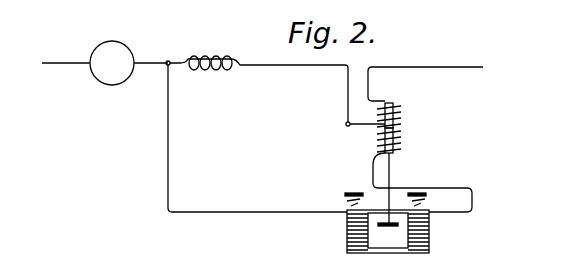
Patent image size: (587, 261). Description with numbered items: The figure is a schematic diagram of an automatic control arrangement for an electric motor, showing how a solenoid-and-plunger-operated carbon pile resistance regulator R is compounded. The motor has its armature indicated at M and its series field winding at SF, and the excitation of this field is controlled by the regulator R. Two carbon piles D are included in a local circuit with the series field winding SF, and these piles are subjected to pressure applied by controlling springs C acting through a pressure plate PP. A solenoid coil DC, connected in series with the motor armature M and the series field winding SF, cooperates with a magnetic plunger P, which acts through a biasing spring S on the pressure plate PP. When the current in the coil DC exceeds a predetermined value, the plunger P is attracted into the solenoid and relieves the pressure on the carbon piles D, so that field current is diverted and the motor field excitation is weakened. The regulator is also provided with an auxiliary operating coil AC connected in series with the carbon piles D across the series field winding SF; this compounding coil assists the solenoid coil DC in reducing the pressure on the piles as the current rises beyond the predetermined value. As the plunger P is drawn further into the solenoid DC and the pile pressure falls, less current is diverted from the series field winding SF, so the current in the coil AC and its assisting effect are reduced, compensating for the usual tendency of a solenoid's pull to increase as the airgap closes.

The motor armature M is at (112, 63).
The series field winding SF is at (257, 54).
The solenoid coil DC is at (396, 107).
The auxiliary operating coil AC is at (396, 137).
The carbon pile resistance regulator R is at (333, 158).
The magnetic plunger P is at (393, 164).
The pressure plate PP is at (373, 208).
The controlling springs C is at (345, 198).
The carbon piles D is at (348, 236).
The biasing spring S is at (397, 225).